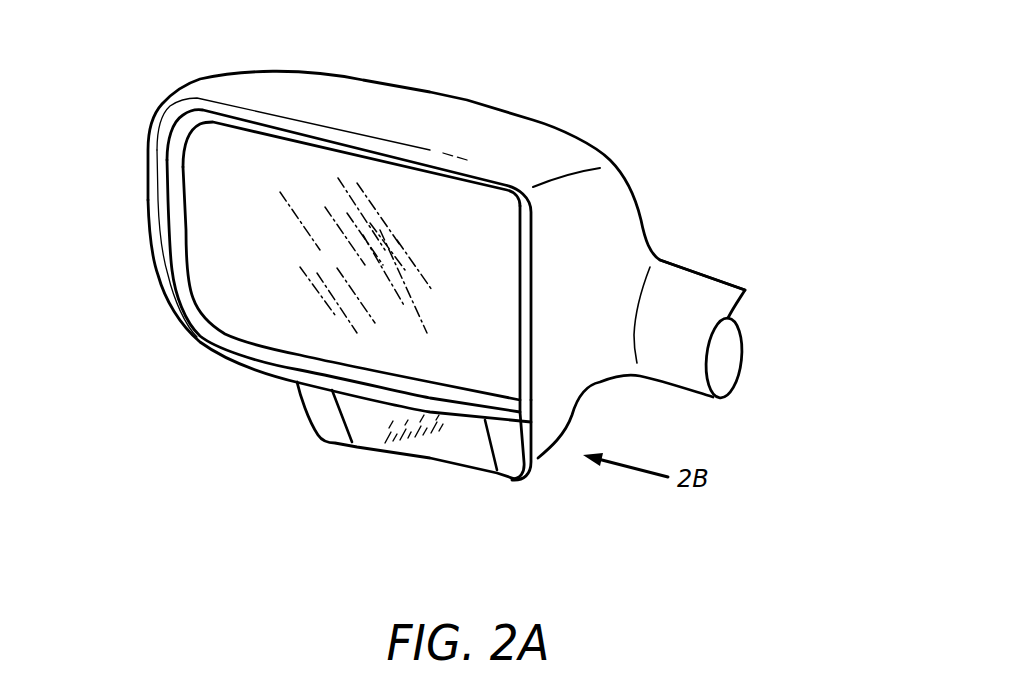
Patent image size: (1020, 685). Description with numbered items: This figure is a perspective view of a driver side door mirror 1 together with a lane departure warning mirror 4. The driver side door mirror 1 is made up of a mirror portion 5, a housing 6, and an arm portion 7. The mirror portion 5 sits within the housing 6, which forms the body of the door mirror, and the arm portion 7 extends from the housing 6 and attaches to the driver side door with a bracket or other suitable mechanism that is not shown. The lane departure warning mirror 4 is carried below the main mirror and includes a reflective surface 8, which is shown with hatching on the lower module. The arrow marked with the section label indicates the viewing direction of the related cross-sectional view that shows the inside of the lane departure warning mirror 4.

The driver side door mirror 1 is at (444, 288).
The lane departure warning mirror 4 is at (542, 458).
The mirror portion 5 is at (224, 220).
The housing 6 is at (448, 124).
The arm portion 7 is at (728, 284).
The reflective surface 8 is at (377, 427).